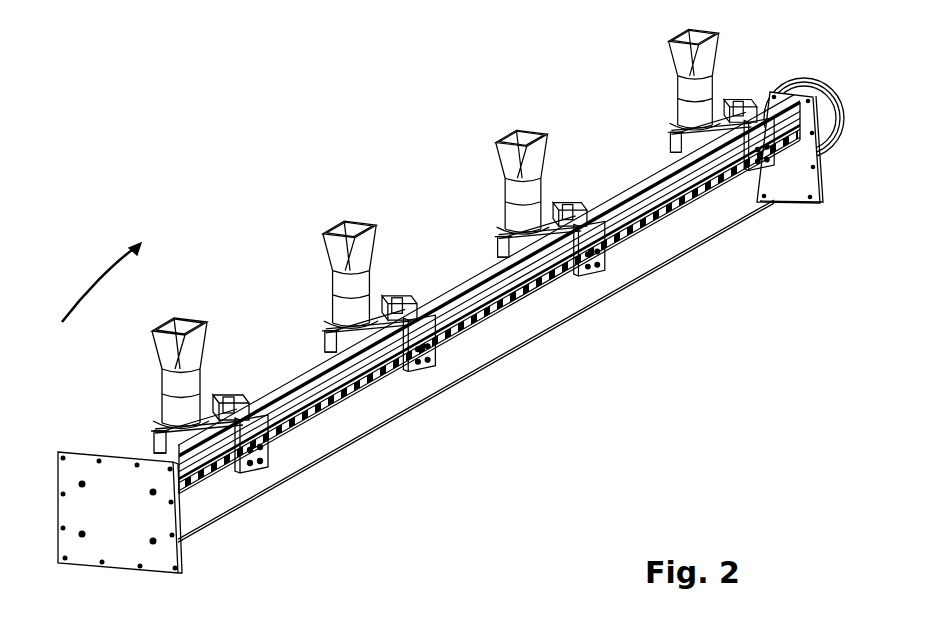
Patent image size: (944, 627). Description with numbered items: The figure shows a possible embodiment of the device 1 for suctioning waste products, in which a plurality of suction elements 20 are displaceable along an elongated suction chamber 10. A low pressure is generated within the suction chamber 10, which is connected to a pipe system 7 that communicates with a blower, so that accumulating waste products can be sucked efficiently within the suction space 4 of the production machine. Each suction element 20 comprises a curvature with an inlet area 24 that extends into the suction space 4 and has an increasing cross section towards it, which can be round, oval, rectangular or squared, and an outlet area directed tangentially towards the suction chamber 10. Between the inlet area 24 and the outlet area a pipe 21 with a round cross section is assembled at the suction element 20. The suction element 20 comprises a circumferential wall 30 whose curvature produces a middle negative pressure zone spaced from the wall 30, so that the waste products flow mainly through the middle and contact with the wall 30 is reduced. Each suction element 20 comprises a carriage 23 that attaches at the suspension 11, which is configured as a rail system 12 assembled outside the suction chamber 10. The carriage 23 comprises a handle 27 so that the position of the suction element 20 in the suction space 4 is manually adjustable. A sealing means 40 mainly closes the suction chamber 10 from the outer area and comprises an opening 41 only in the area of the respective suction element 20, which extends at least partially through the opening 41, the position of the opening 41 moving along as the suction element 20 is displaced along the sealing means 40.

The device 1 is at (694, 400).
The suction space 4 is at (89, 293).
The pipe system 7 is at (801, 78).
The suction chamber 10 is at (220, 500).
The suspension 11 is at (553, 288).
The rail system 12 is at (476, 372).
The suction element 20 is at (210, 365).
The pipe 21 is at (372, 283).
The carriage 23 is at (298, 418).
The inlet area 24 is at (318, 240).
The handle 27 is at (252, 452).
The circumferential wall 30 is at (165, 406).
The sealing means 40 is at (460, 282).
The opening 41 is at (352, 226).